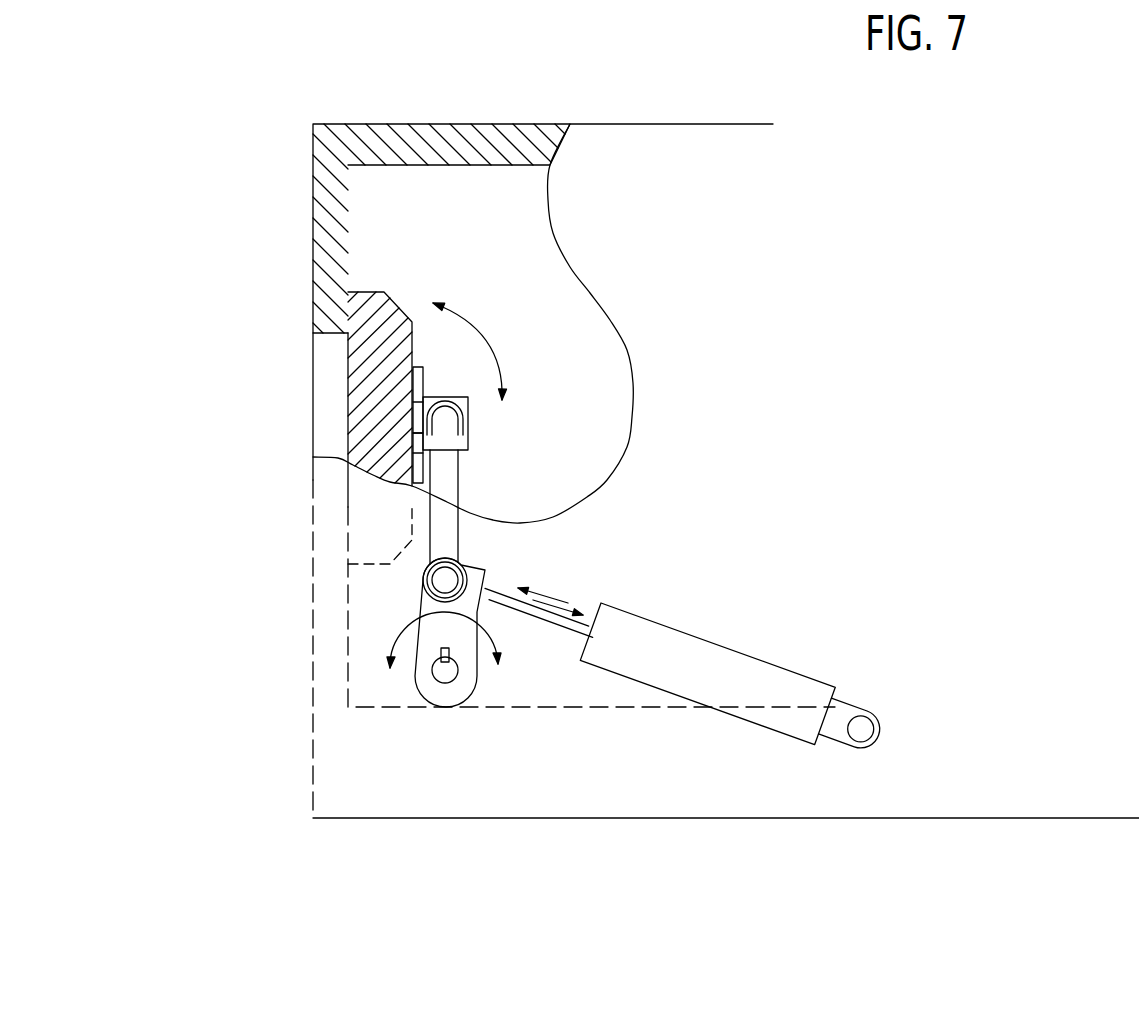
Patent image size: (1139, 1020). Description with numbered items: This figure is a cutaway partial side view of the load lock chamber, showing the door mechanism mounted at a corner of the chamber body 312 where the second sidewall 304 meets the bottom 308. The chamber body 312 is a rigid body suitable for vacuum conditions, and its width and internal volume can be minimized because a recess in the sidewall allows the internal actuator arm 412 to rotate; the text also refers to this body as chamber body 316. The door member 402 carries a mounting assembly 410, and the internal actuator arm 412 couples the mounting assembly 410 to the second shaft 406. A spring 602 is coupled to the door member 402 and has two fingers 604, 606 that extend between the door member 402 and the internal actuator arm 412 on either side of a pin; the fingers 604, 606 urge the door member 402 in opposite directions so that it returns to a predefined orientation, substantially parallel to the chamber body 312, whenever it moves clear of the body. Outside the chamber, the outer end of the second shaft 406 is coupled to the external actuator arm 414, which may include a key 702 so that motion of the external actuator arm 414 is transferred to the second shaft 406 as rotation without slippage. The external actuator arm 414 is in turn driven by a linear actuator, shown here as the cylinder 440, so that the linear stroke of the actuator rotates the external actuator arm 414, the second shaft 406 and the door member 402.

The chamber body 312 is at (313, 162).
The second sidewall 304 is at (312, 238).
The chamber body 316 is at (335, 398).
The door member 402 is at (392, 323).
The spring 602 is at (433, 380).
The mounting assembly 410 is at (470, 420).
The internal actuator arm 412 is at (453, 478).
The actuator 440 is at (640, 630).
The external actuator arm 414 is at (423, 637).
The finger 604 is at (413, 410).
The finger 606 is at (413, 447).
The second shaft 406 is at (443, 676).
The key 702 is at (495, 665).
The bottom 308 is at (780, 820).